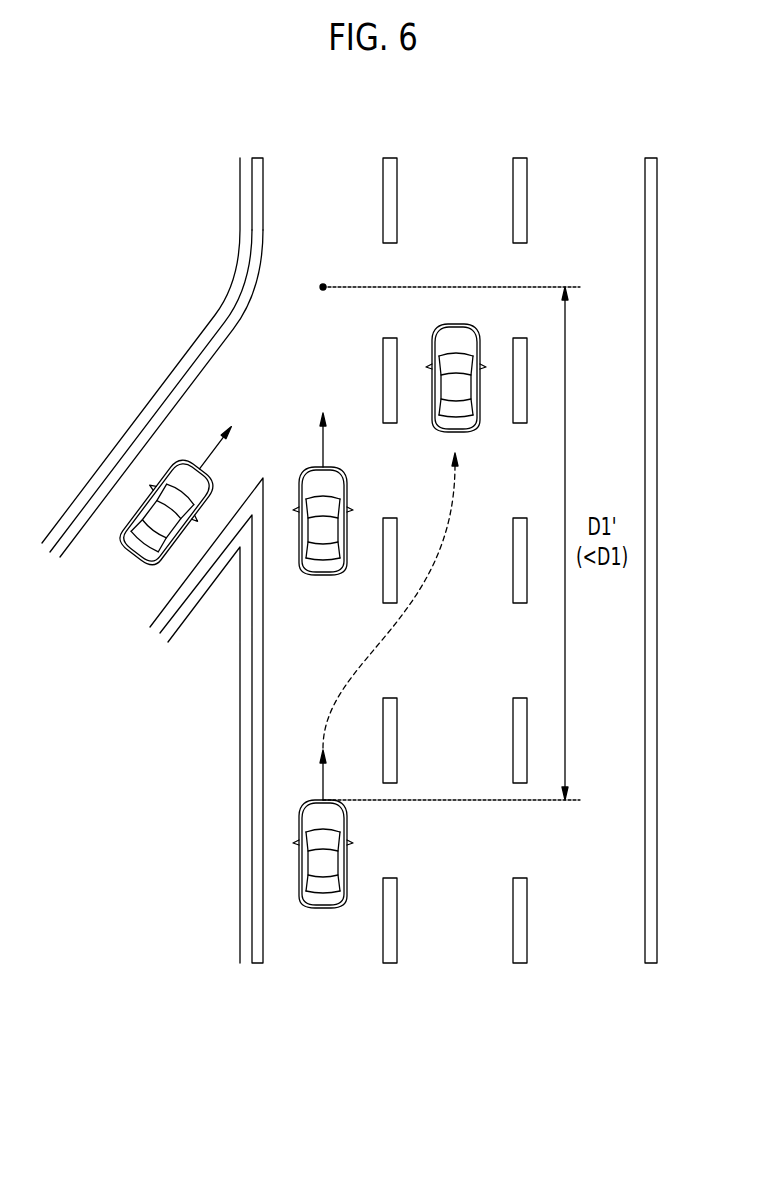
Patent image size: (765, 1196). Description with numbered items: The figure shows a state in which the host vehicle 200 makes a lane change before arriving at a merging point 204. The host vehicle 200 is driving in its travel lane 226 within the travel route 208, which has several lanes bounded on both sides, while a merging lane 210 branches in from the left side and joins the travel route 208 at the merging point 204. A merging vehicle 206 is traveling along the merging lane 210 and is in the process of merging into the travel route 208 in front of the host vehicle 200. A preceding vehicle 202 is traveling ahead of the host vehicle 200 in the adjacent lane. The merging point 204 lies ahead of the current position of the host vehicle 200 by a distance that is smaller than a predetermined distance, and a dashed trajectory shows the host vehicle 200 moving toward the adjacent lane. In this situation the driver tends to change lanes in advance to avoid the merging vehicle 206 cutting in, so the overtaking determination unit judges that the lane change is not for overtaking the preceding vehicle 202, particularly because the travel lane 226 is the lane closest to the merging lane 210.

The host vehicle 200 is at (323, 910).
The preceding vehicle 202 is at (347, 487).
The merging point 204 is at (323, 286).
The merging vehicle 206 is at (168, 470).
The travel route 208 is at (262, 122).
The merging lane 210 is at (176, 367).
The travel lane 226 is at (362, 953).